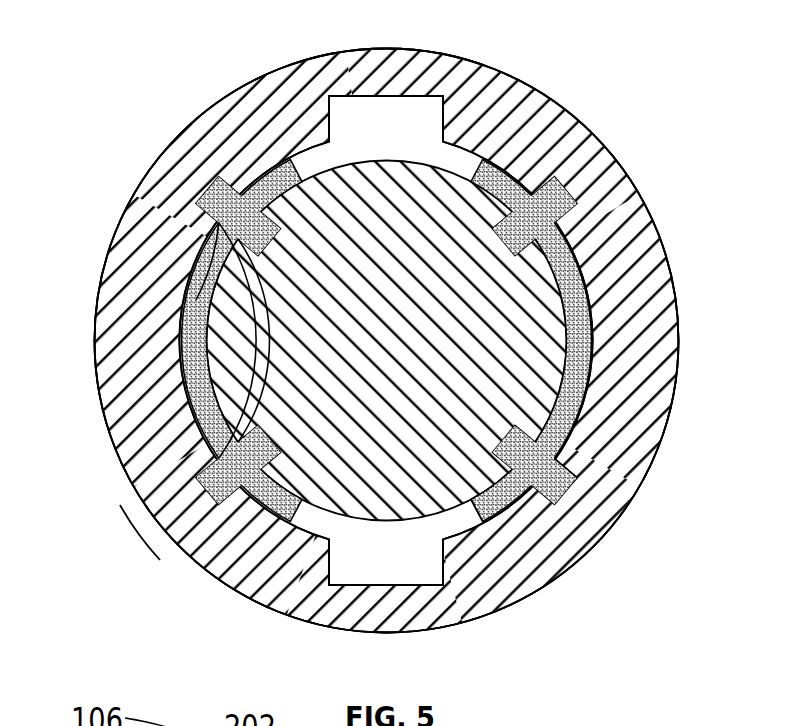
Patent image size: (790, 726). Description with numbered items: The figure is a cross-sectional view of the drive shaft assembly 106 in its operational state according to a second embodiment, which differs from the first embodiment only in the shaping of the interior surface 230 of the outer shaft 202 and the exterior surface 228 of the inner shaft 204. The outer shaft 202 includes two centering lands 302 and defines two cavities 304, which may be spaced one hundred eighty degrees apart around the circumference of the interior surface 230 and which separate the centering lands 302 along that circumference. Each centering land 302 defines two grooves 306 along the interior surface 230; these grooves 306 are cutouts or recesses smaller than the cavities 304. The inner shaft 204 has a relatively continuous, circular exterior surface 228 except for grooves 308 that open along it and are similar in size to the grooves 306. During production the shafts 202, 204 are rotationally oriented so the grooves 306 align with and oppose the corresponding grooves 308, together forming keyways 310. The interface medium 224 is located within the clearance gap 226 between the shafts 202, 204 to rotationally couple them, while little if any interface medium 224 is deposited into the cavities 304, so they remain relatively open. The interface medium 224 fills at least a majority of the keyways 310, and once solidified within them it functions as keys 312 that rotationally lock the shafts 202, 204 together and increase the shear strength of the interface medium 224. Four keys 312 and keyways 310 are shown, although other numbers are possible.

The drive shaft assembly 106 is at (152, 34).
The outer shaft 202 is at (130, 243).
The inner shaft 204 is at (200, 543).
The interface medium 224 is at (313, 471).
The clearance gap 226 is at (195, 267).
The exterior surface 228 is at (190, 356).
The interior surface 230 is at (197, 264).
The centering lands 302 is at (263, 165).
The cavities 304 is at (407, 102).
The grooves 306 is at (216, 190).
The grooves 308 is at (324, 162).
The keyways 310 is at (487, 518).
The keys 312 is at (573, 478).